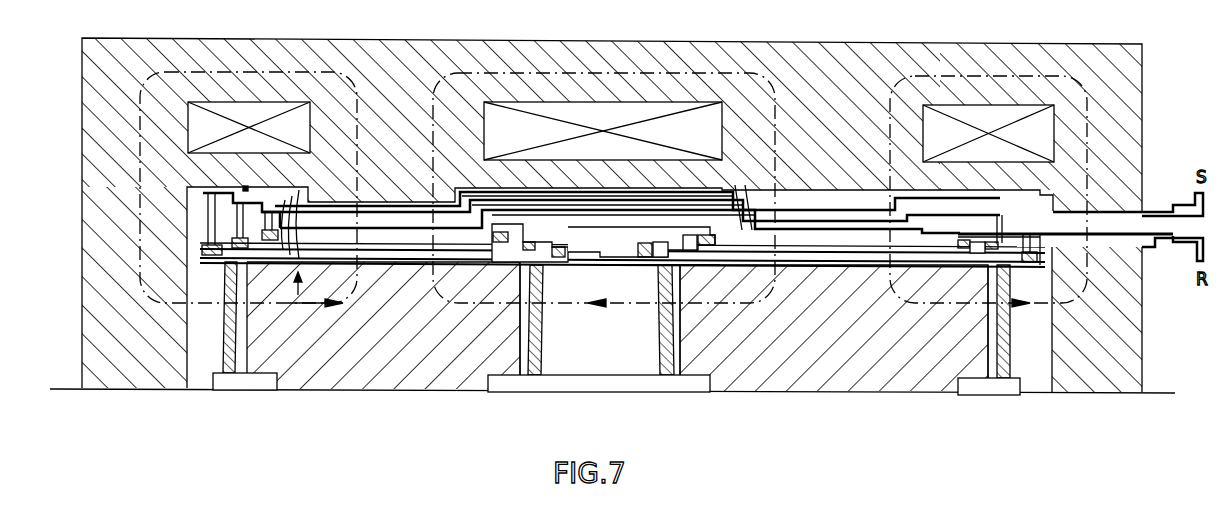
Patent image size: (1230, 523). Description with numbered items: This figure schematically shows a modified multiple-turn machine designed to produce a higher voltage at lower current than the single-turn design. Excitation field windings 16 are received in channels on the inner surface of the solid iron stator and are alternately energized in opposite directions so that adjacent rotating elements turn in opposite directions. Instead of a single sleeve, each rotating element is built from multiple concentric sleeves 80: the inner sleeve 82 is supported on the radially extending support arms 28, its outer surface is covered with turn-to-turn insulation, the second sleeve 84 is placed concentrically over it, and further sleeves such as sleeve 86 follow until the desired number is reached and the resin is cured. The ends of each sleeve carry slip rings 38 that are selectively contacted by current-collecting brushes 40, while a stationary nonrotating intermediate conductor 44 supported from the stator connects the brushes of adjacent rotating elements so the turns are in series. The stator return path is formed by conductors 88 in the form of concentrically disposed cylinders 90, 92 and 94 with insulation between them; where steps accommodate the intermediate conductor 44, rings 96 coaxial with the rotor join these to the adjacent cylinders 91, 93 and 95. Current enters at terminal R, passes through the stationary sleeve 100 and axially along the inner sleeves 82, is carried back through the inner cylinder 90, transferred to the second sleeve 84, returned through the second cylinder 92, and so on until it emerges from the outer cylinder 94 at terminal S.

The excitation field windings 16 is at (310, 128).
The support arms 28 is at (226, 345).
The slip rings 38 is at (245, 258).
The current-collecting brushes 40 is at (268, 216).
The stationary nonrotating intermediate conductor 44 is at (614, 252).
The multiple concentric sleeves 80 is at (301, 290).
The inner sleeve 82 is at (345, 252).
The second sleeve 84 is at (375, 258).
The lower plate 86 is at (405, 265).
The conductors 88 is at (244, 182).
The inner cylinder 90 is at (327, 206).
The adjacent cylinder 91 is at (570, 204).
The second cylinder 92 is at (366, 212).
The adjacent cylinder 93 is at (608, 204).
The outer cylinder 94 is at (405, 226).
The adjacent cylinder 95 is at (642, 204).
The rings 96 is at (302, 200).
The stationary sleeve 100 is at (1098, 247).